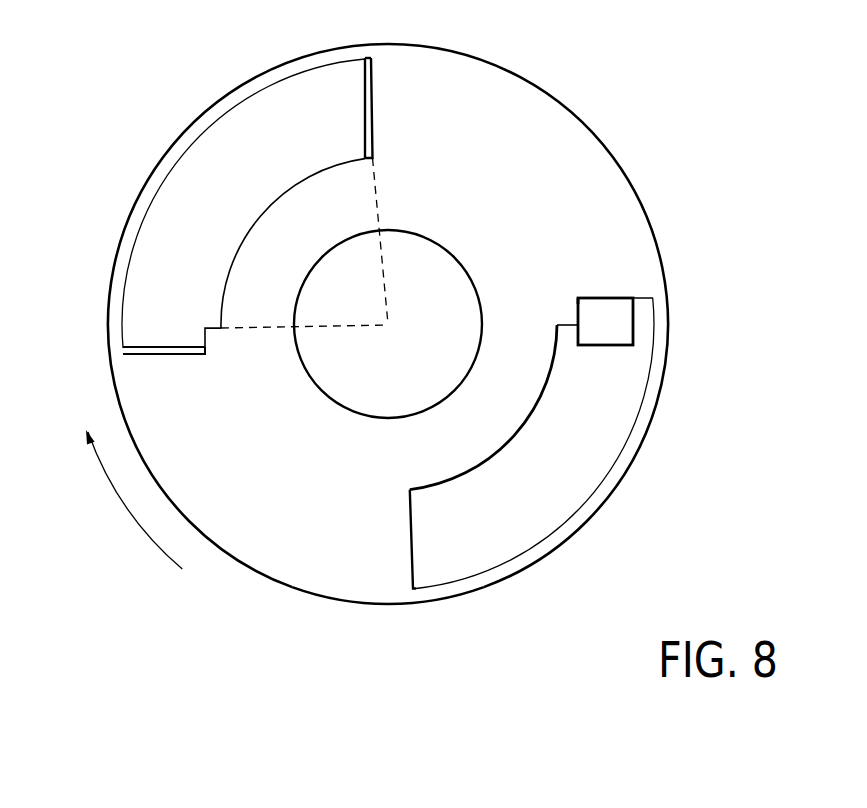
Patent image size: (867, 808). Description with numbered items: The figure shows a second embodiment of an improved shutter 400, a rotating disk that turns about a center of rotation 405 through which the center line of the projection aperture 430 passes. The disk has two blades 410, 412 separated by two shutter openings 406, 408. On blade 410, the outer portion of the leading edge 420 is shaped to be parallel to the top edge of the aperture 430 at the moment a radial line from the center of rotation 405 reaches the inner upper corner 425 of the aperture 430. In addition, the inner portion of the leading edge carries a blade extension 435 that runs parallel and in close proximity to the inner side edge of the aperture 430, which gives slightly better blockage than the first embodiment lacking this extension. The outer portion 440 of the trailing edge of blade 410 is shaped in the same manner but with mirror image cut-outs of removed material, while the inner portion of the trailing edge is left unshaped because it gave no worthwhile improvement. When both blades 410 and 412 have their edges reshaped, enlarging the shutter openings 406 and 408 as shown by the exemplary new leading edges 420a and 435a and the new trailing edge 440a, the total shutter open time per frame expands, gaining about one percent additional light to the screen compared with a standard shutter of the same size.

The shutter 400 is at (389, 365).
The center of rotation 405 is at (386, 328).
The shutter opening 406 is at (202, 168).
The shutter opening 408 is at (545, 505).
The blade 410 is at (522, 100).
The blade 412 is at (356, 580).
The leading edge 420 is at (643, 297).
The new leading edge 420a is at (155, 357).
The inner upper corner 425 is at (578, 299).
The aperture 430 is at (625, 322).
The blade extension 435 is at (202, 337).
The new leading edge 435a is at (203, 343).
The outer portion of the trailing edge 440 is at (365, 95).
The new trailing edge 440a is at (371, 72).